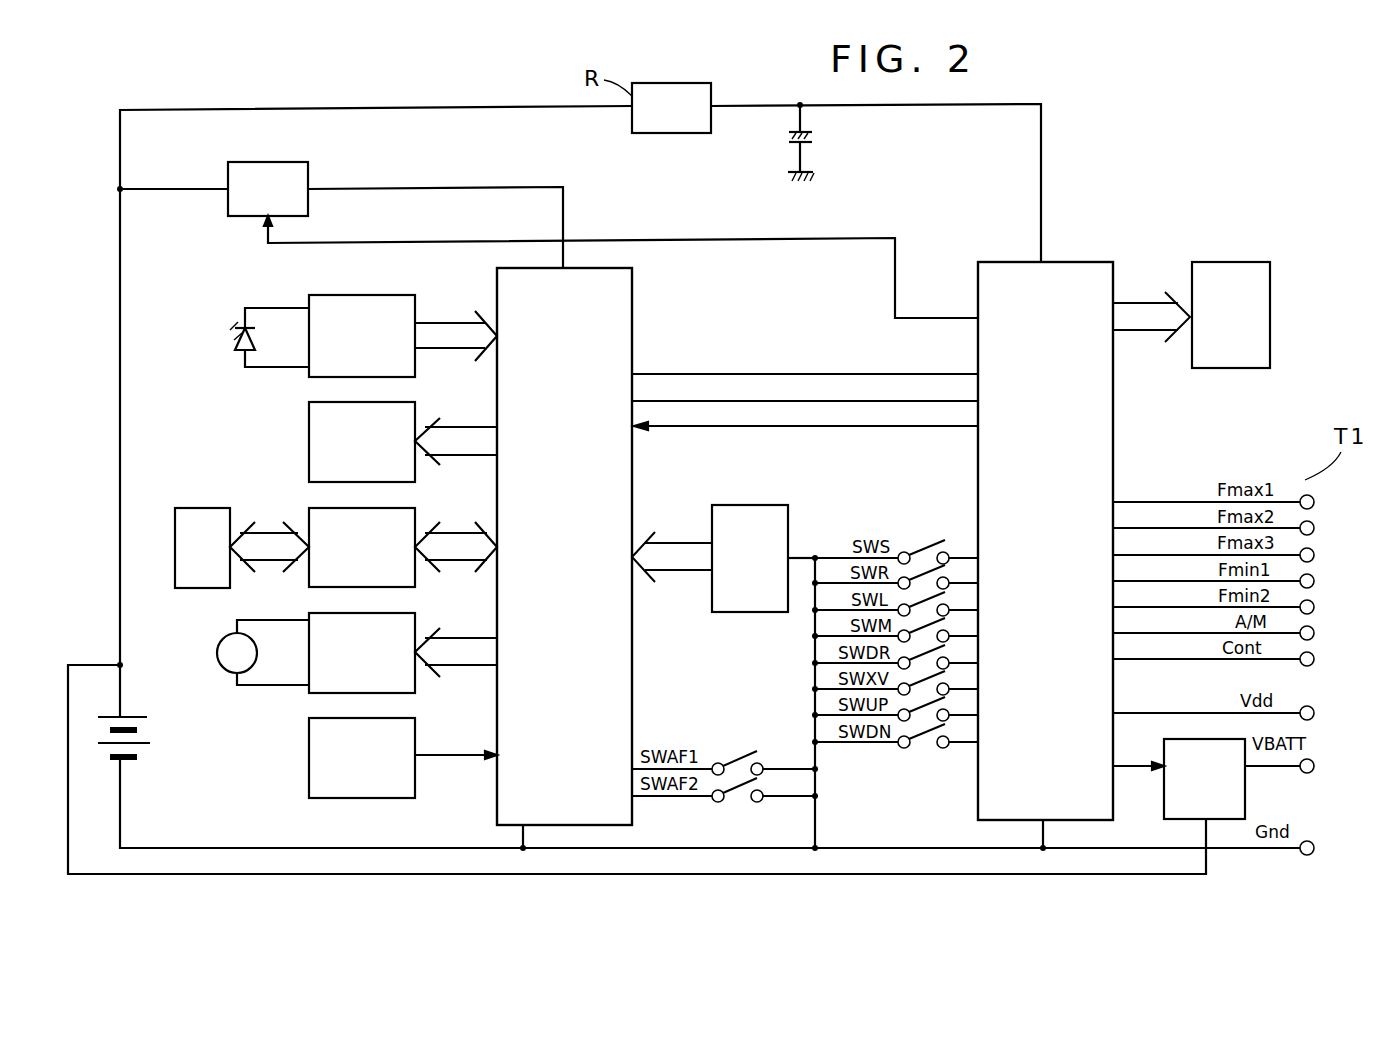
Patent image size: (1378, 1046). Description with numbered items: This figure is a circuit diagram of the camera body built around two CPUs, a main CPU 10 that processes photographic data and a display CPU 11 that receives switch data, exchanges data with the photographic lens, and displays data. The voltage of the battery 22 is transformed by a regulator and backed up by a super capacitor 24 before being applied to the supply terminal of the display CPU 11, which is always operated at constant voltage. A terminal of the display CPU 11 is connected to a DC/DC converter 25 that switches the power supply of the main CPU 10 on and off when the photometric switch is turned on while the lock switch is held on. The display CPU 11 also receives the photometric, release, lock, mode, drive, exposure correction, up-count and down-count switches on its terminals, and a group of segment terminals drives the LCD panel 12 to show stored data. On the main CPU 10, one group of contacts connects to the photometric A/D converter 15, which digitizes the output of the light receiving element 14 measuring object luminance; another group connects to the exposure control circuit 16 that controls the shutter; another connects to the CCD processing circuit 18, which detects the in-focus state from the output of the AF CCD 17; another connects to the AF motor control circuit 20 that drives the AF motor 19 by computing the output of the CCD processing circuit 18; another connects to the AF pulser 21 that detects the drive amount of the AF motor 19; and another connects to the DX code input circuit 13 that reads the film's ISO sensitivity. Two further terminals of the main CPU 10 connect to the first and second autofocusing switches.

The main CPU 10 is at (632, 293).
The display CPU 11 is at (1088, 262).
The LCD panel 12 is at (1225, 262).
The DX code input circuit 13 is at (742, 505).
The light receiving element 14 is at (248, 337).
The A/D converter 15 is at (358, 295).
The exposure control circuit 16 is at (308, 429).
The AF CCD 17 is at (200, 508).
The CCD processing circuit 18 is at (309, 514).
The AF motor 19 is at (231, 670).
The AF motor control circuit 20 is at (321, 696).
The AF pulser 21 is at (309, 767).
The battery 22 is at (150, 750).
The super capacitor 24 is at (814, 137).
The DC/DC converter 25 is at (308, 170).